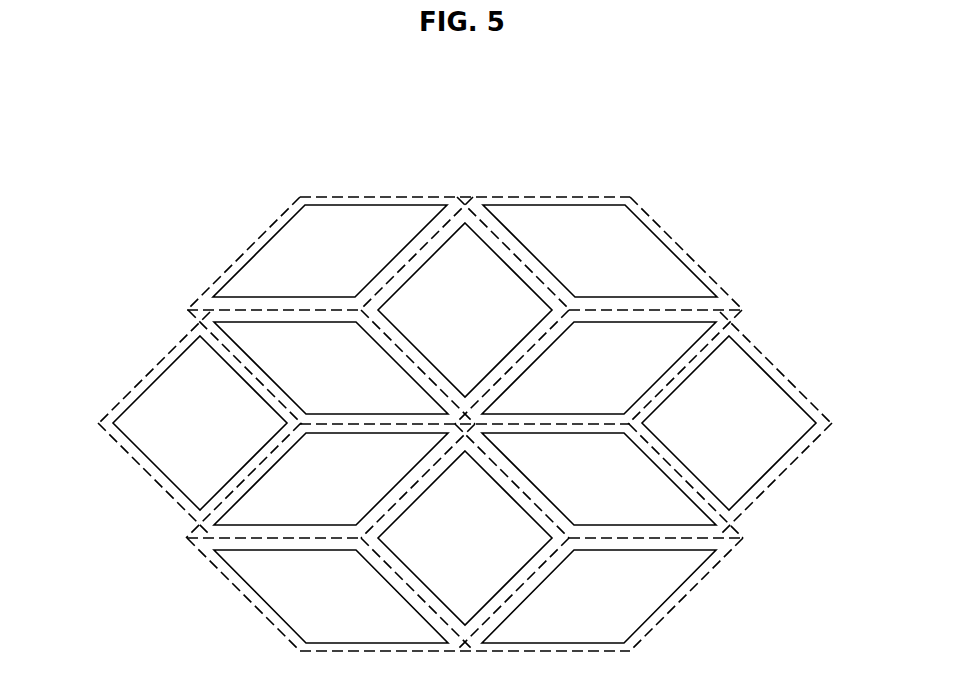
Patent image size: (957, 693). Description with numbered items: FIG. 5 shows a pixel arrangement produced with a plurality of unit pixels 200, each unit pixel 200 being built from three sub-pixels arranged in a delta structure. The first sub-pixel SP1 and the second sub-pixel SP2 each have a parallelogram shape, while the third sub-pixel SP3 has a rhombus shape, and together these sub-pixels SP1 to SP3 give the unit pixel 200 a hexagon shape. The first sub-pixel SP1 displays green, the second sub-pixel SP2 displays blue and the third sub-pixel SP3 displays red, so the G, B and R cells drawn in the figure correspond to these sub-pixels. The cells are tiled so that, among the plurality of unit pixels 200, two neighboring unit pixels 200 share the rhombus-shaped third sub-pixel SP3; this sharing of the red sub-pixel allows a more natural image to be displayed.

The unit pixel 200 is at (238, 253).
The first sub-pixel SP1 is at (377, 222).
The second sub-pixel SP2 is at (364, 398).
The third sub-pixel SP3 is at (503, 277).